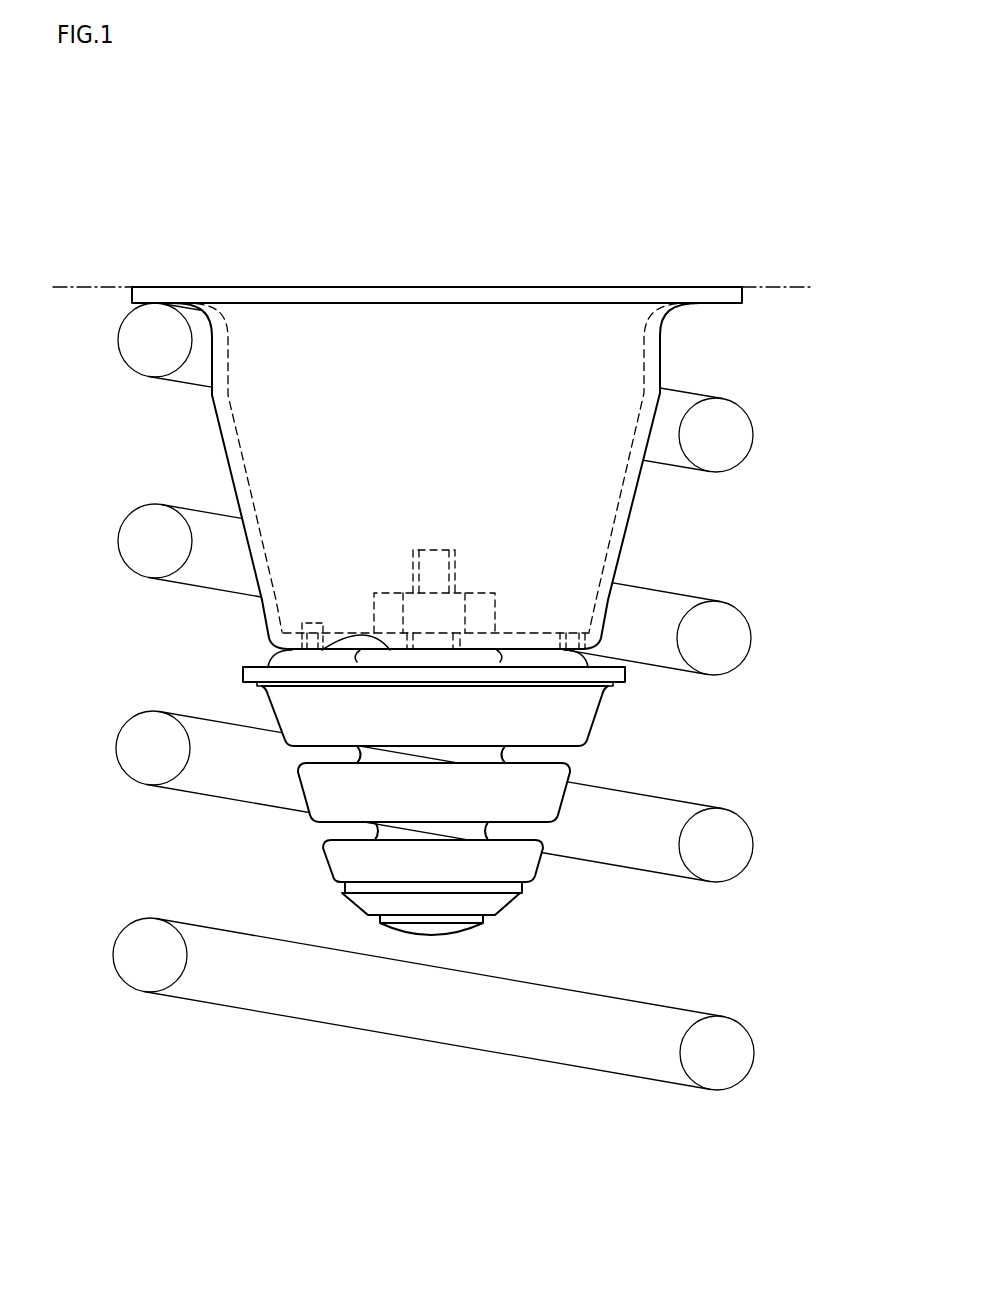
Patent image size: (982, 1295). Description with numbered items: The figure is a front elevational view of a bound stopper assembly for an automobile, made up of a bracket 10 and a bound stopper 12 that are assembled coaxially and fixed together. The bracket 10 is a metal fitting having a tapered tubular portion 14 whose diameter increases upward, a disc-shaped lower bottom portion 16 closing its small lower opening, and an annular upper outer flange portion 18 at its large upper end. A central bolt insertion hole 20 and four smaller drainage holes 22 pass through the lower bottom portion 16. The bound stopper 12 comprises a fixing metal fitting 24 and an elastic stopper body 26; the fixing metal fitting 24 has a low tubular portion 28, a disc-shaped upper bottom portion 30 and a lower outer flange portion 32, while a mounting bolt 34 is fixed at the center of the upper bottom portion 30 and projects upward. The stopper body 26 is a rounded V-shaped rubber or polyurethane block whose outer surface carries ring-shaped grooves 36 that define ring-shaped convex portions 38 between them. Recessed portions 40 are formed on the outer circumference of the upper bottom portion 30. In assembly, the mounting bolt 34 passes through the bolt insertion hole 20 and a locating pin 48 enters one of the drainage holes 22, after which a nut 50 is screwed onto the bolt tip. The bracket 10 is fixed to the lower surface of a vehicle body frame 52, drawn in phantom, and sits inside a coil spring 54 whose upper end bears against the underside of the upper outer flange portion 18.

The bracket 10 is at (411, 444).
The bound stopper 12 is at (427, 896).
The tubular portion 14 is at (237, 445).
The lower bottom portion 16 is at (502, 645).
The upper outer flange portion 18 is at (168, 293).
The bolt insertion hole 20 is at (412, 630).
The drainage holes 22 is at (302, 632).
The fixing metal fitting 24 is at (236, 673).
The stopper body 26 is at (312, 862).
The tubular portion 28 is at (290, 652).
The upper bottom portion 30 is at (260, 686).
The lower outer flange portion 32 is at (603, 673).
The mounting bolt 34 is at (437, 570).
The ring-shaped grooves 36 is at (325, 765).
The ring-shaped convex portions 38 is at (307, 713).
The recessed portions 40 is at (430, 658).
The locating pin 48 is at (313, 626).
The nut 50 is at (482, 612).
The vehicle body frame 52 is at (767, 290).
The coil spring 54 is at (723, 437).